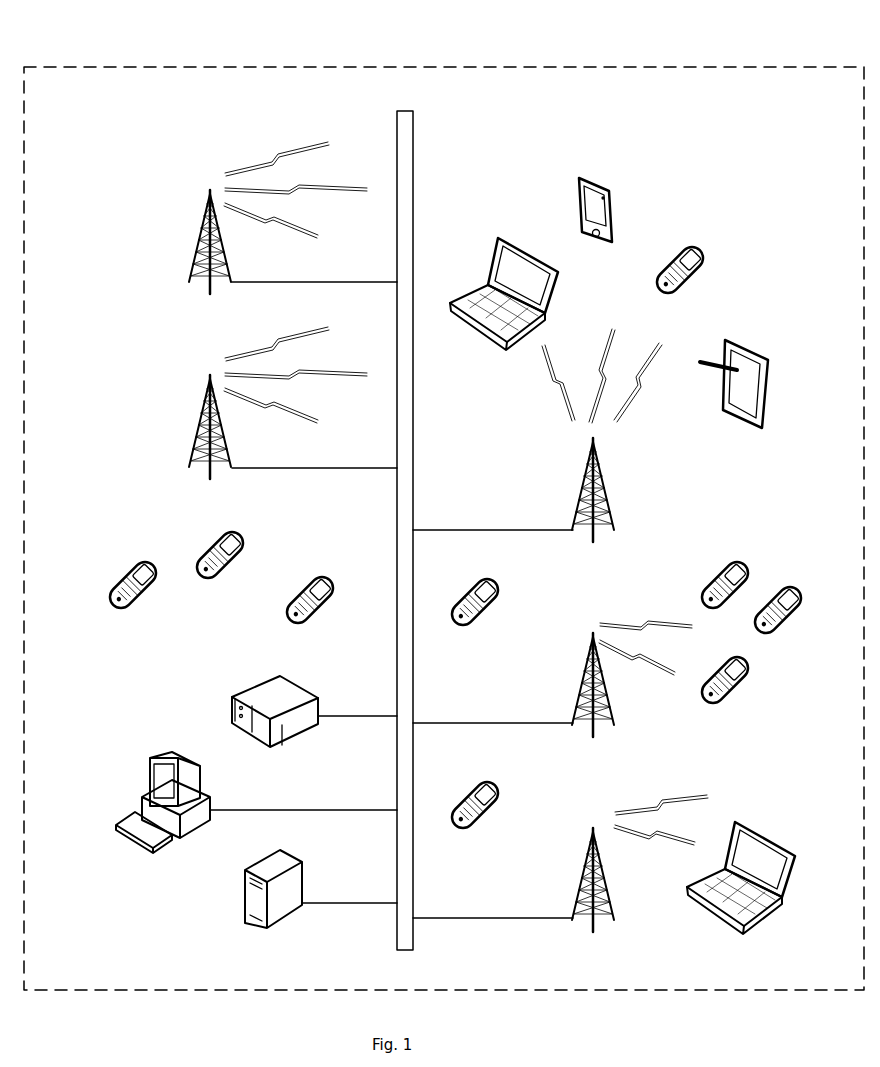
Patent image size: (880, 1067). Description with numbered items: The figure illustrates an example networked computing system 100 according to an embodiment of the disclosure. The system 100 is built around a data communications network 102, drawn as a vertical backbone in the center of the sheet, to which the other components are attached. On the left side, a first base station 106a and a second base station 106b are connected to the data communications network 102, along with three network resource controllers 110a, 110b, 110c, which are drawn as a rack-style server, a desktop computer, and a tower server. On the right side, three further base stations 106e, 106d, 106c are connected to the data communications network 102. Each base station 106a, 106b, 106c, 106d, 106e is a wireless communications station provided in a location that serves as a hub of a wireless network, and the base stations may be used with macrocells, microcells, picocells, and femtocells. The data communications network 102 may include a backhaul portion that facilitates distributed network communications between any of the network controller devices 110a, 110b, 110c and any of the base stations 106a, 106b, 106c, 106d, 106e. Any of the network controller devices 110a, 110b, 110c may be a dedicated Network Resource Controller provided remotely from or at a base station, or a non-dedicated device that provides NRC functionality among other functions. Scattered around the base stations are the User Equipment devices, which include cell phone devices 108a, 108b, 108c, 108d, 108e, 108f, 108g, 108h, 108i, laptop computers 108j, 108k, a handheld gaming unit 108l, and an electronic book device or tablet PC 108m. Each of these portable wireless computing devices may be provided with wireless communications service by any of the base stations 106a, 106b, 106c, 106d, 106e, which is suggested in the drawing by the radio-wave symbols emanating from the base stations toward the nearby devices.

The networked computing system 100 is at (303, 34).
The data communications network 102 is at (396, 125).
The base station 106a is at (200, 237).
The base station 106b is at (200, 423).
The base station 106c is at (585, 866).
The base station 106d is at (580, 686).
The base station 106e is at (607, 500).
The cell phone device 108a is at (123, 580).
The cell phone device 108b is at (215, 535).
The cell phone device 108c is at (290, 625).
The cell phone device 108d is at (495, 785).
The cell phone device 108e is at (738, 695).
The cell phone device 108f is at (790, 628).
The cell phone device 108g is at (750, 565).
The cell phone device 108h is at (495, 582).
The cell phone device 108i is at (712, 250).
The laptop computer 108j is at (760, 830).
The laptop computer 108k is at (500, 238).
The handheld gaming unit 108l is at (615, 198).
The tablet PC 108m is at (770, 352).
The network resource controller 110a is at (228, 712).
The network resource controller 110b is at (150, 760).
The network resource controller 110c is at (245, 908).